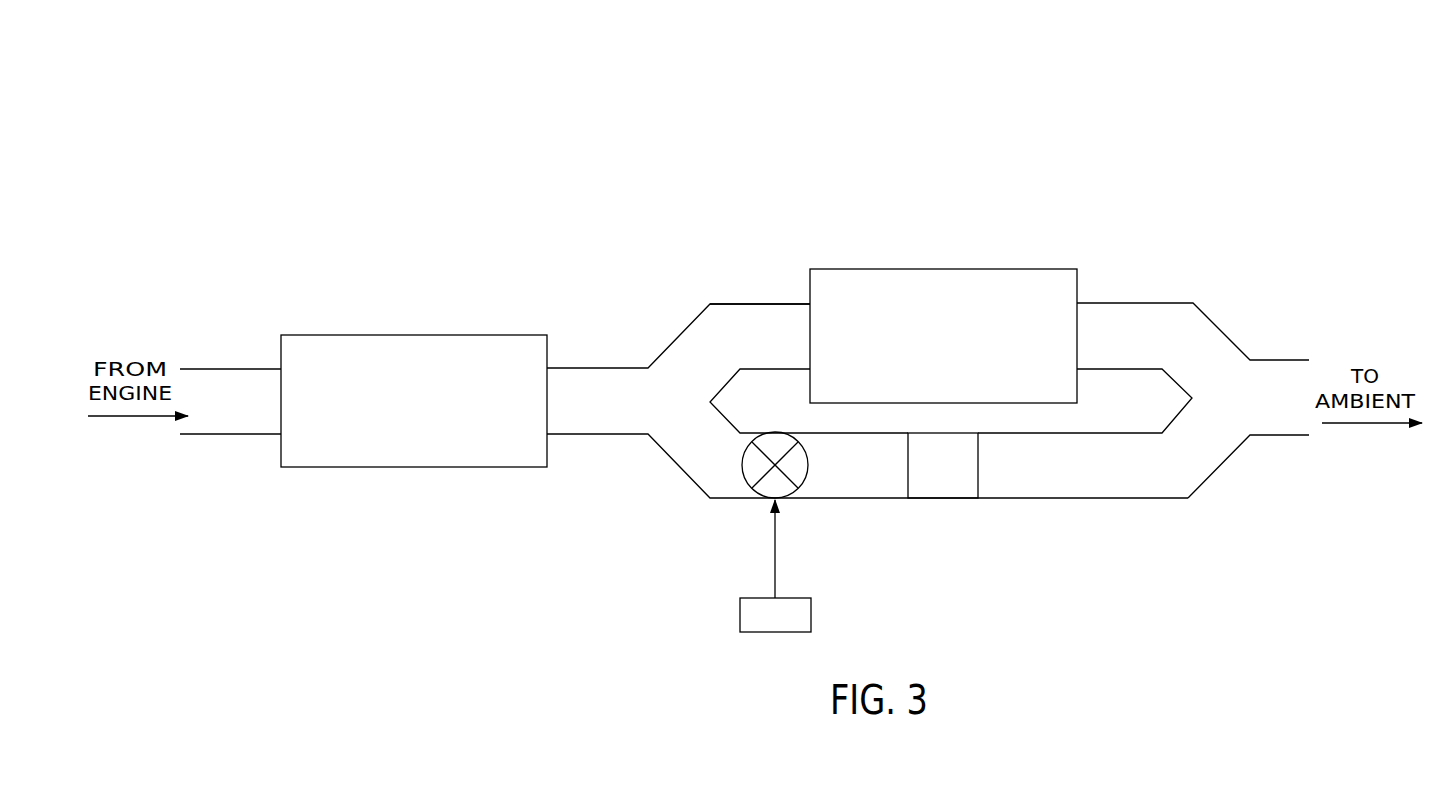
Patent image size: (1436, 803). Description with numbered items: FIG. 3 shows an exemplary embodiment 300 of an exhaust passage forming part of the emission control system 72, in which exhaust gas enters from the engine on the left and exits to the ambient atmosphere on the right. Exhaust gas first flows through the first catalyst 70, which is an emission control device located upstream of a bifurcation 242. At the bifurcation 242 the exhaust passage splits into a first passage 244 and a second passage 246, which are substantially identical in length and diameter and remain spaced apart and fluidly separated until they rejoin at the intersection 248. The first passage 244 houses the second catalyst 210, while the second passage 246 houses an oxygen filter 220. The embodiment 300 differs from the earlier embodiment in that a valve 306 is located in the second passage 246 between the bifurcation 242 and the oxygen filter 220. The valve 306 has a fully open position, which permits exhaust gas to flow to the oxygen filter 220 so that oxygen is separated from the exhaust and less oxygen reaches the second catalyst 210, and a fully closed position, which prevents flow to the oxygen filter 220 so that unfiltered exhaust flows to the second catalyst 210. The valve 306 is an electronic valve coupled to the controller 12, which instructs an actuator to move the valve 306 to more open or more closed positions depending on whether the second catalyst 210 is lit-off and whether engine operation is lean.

The exemplary embodiment 300 is at (1182, 77).
The emission control system 72 is at (1133, 180).
The first catalyst 70 is at (401, 411).
The bifurcation 242 is at (645, 405).
The first passage 244 is at (706, 326).
The second passage 246 is at (693, 450).
The intersection 248 is at (1238, 387).
The second catalyst 210 is at (925, 345).
The oxygen filter 220 is at (925, 476).
The valve 306 is at (807, 482).
The controller 12 is at (763, 627).